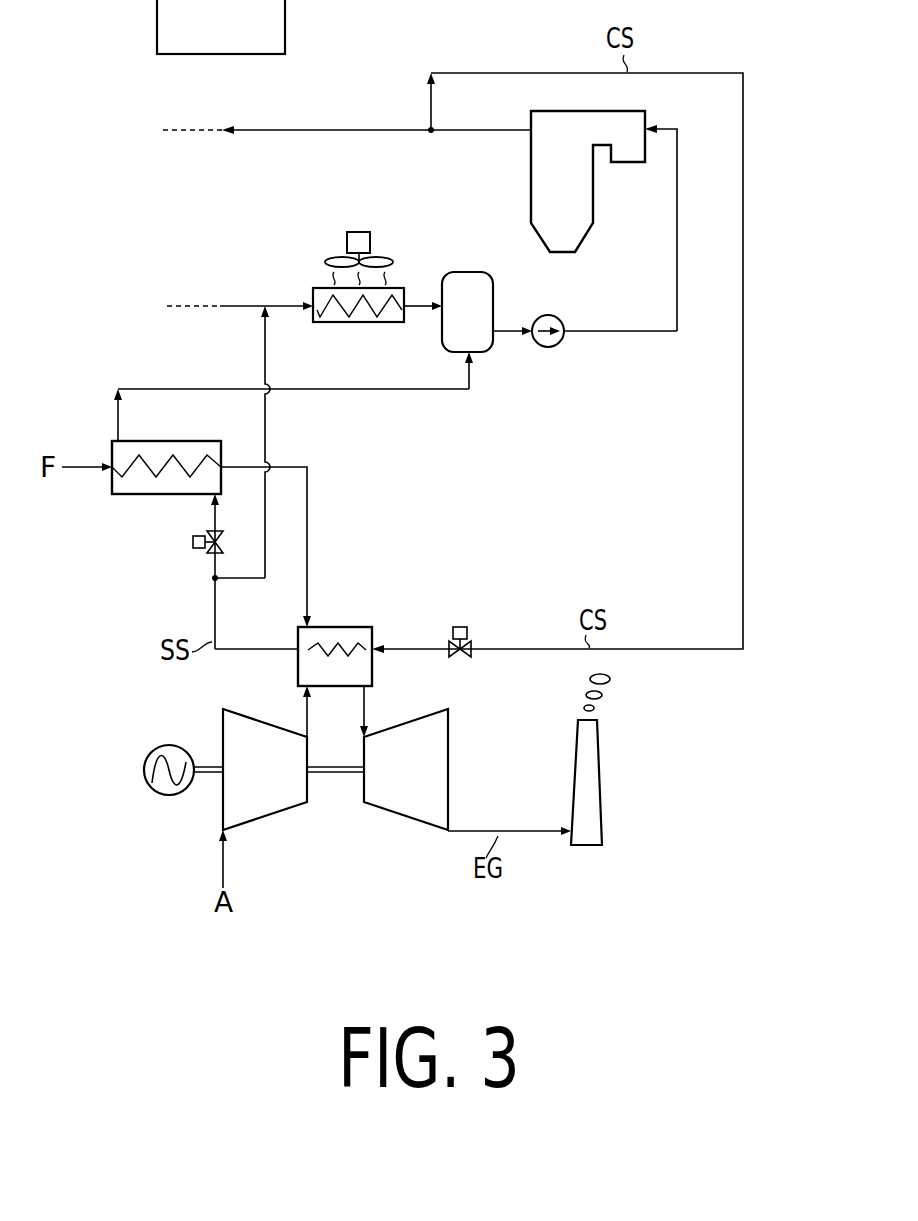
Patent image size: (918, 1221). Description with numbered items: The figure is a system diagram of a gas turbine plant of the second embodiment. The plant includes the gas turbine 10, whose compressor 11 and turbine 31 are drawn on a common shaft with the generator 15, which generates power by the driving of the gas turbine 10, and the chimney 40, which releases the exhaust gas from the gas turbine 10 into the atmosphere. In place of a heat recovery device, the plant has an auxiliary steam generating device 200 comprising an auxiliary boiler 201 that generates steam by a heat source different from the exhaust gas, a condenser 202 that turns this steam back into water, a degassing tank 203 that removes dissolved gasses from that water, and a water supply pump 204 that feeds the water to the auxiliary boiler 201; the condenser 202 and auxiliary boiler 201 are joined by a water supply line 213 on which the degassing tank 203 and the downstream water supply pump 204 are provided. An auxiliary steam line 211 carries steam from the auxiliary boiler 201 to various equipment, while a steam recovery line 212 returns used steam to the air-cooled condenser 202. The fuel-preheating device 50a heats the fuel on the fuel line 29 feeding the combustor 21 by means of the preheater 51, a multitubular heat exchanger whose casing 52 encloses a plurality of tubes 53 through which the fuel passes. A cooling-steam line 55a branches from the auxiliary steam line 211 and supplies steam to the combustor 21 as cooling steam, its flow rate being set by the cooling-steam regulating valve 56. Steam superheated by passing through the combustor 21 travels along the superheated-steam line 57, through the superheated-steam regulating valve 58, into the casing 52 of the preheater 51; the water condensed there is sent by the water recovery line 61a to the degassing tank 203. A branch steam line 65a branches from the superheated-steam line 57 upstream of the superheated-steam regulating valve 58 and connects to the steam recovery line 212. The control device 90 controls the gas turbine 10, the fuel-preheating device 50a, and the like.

The control device 90 is at (286, 18).
The auxiliary steam line 211 is at (358, 128).
The cooling-steam line 55a is at (499, 72).
The auxiliary boiler 201 is at (529, 160).
The water supply line 213 is at (676, 260).
The water supply pump 204 is at (548, 350).
The degassing tank 203 is at (471, 271).
The condenser 202 is at (312, 288).
The steam recovery line 212 is at (238, 308).
The water recovery line 61a is at (158, 388).
The branch steam line 65a is at (267, 430).
The preheater 51 is at (122, 495).
The tubes 53 is at (148, 458).
The casing 52 is at (200, 430).
The fuel-preheating device 50a is at (130, 550).
The fuel line 29 is at (74, 462).
The superheated-steam line 57 is at (212, 600).
The superheated-steam regulating valve 58 is at (198, 552).
The combustor 21 is at (297, 680).
The cooling-steam regulating valve 56 is at (465, 660).
The gas turbine 10 is at (335, 799).
The compressor 11 is at (260, 814).
The turbine 31 is at (410, 814).
The generator 15 is at (166, 796).
The chimney 40 is at (588, 847).
The auxiliary steam generating device 200 is at (631, 352).